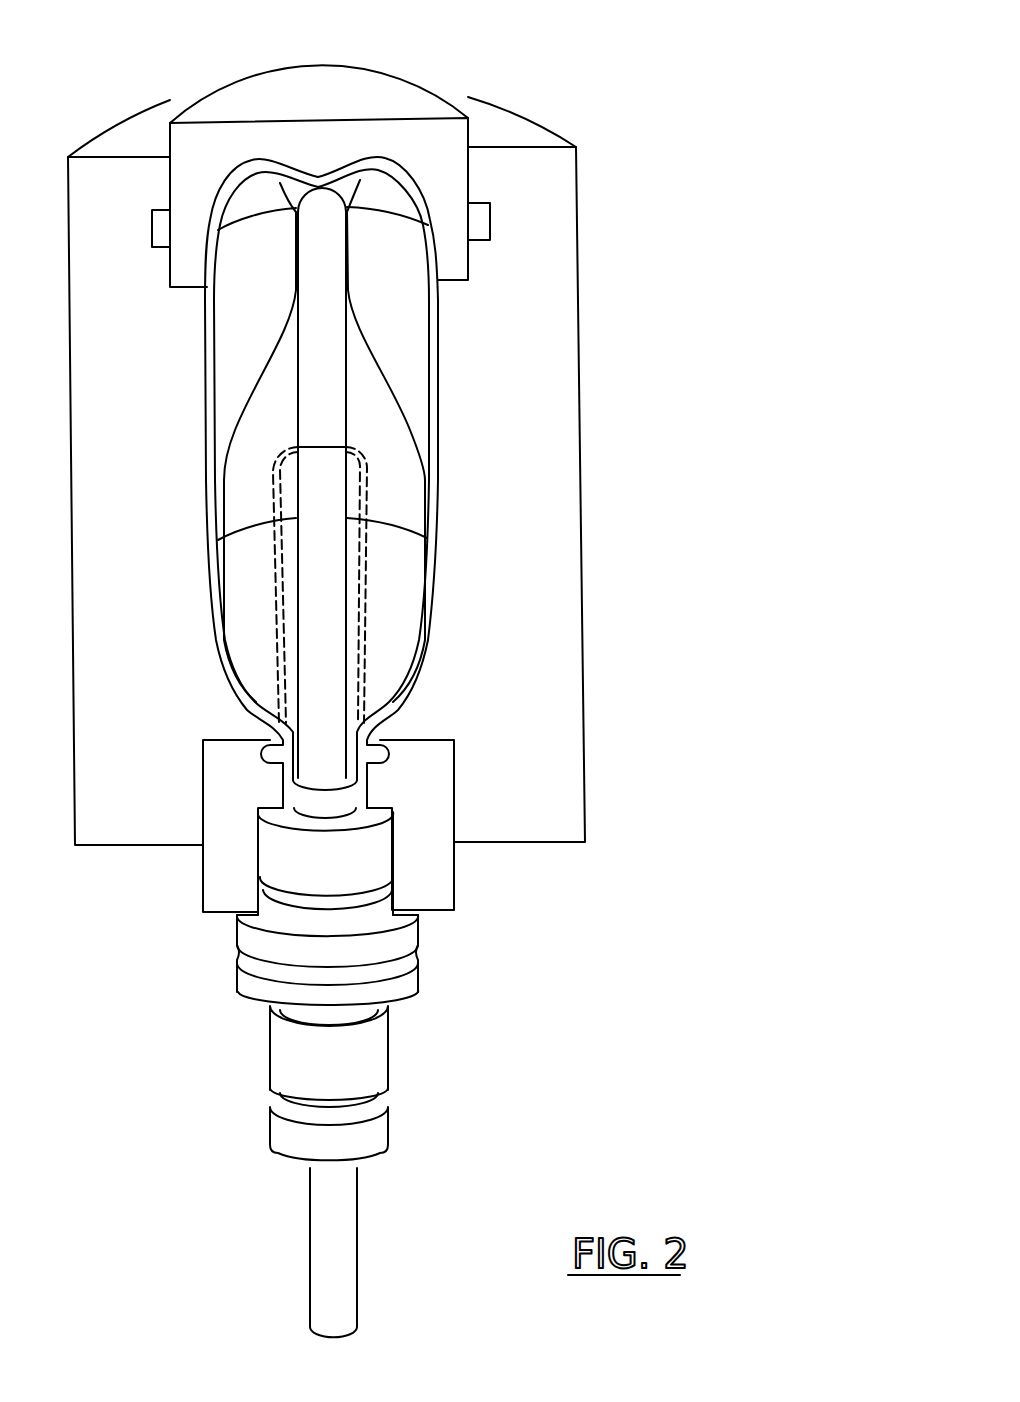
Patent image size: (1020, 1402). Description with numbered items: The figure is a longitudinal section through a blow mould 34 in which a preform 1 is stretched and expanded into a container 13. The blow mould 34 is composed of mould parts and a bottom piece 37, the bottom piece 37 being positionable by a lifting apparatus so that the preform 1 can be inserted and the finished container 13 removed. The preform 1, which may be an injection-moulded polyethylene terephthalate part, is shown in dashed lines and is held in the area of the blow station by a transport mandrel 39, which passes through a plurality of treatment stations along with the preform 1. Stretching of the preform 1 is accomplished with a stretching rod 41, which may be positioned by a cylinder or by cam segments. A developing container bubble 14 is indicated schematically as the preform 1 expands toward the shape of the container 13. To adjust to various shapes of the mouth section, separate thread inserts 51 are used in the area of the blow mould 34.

The preform 1 is at (363, 618).
The container 13 is at (433, 388).
The container bubble 14 is at (378, 346).
The blow mould 34 is at (533, 457).
The bottom piece 37 is at (402, 86).
The transport mandrel 39 is at (407, 983).
The stretching rod 41 is at (308, 1255).
The thread insert 51 is at (435, 870).